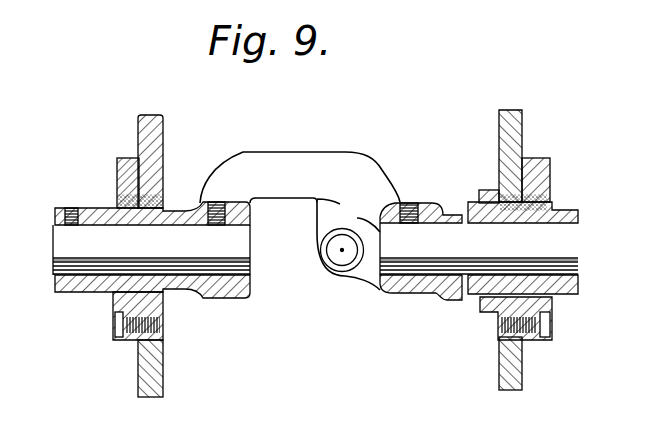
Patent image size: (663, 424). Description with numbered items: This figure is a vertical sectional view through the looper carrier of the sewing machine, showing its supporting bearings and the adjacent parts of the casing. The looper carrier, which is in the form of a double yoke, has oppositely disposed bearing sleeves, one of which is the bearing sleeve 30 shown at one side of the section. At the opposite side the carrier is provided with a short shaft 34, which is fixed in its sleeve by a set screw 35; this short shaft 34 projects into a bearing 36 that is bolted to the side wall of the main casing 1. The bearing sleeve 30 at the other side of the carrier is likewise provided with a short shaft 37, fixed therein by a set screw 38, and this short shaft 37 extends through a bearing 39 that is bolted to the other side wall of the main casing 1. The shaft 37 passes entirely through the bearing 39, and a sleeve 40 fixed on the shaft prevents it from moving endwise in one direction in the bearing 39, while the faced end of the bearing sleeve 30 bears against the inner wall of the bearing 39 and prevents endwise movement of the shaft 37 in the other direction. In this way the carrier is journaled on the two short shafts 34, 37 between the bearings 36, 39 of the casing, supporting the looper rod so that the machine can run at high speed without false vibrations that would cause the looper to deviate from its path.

The main casing 1 is at (150, 133).
The bearing sleeve 30 is at (181, 212).
The short shaft 34 is at (436, 242).
The set screw 35 is at (405, 198).
The bearing 36 is at (528, 186).
The short shaft 37 is at (228, 257).
The set screw 38 is at (220, 199).
The bearing 39 is at (135, 169).
The sleeve 40 is at (72, 296).